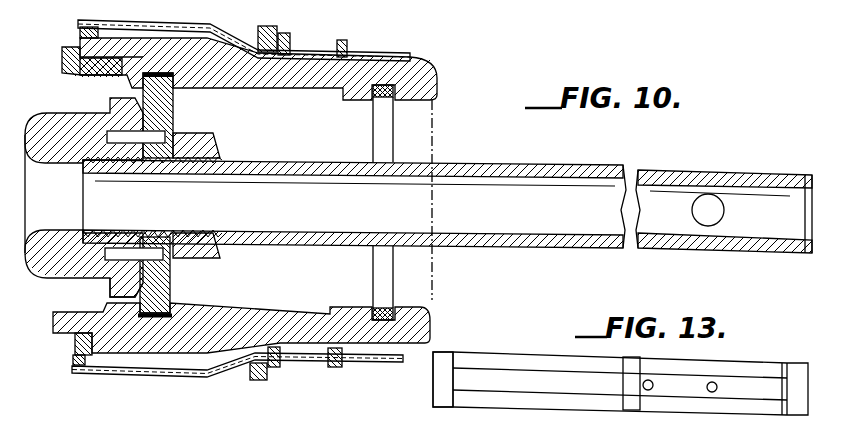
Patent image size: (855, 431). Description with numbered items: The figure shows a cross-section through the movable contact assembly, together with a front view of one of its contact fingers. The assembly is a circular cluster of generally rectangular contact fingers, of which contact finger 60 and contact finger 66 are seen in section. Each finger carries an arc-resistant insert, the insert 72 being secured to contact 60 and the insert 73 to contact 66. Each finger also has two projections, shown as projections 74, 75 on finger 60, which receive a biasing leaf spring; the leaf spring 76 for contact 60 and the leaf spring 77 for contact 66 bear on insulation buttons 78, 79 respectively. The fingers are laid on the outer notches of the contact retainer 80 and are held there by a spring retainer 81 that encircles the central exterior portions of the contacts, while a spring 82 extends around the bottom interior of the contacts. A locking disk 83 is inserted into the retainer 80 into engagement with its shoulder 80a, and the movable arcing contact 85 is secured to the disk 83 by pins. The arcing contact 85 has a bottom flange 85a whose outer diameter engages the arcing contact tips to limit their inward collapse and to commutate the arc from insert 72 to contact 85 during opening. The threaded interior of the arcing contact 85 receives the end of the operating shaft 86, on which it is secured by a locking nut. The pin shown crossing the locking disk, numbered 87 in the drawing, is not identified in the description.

In FIG. 10, the contact finger 60 is at (290, 86).
In FIG. 13, the contact finger 60 is at (490, 352).
In FIG. 10, the contact finger 66 is at (305, 312).
In FIG. 10, the arc-resistant insert 72 is at (62, 60).
In FIG. 13, the arc-resistant insert 72 is at (433, 390).
In FIG. 10, the arc-resistant insert 73 is at (53, 324).
In FIG. 10, the projection 74 is at (290, 38).
In FIG. 13, the projection 74 is at (650, 390).
In FIG. 10, the projection 75 is at (346, 42).
In FIG. 13, the projection 75 is at (714, 392).
In FIG. 10, the leaf spring 76 is at (192, 18).
In FIG. 13, the leaf spring 76 is at (533, 368).
In FIG. 10, the leaf spring 77 is at (125, 376).
In FIG. 10, the insulation button 78 is at (80, 33).
In FIG. 10, the insulation button 79 is at (73, 362).
In FIG. 13, the contact retainer 80 is at (628, 410).
In FIG. 10, the shoulder 80a is at (178, 262).
In FIG. 10, the spring retainer 81 is at (270, 27).
In FIG. 10, the spring 82 is at (373, 300).
In FIG. 10, the locking disk 83 is at (177, 120).
In FIG. 10, the movable arcing contact 85 is at (62, 112).
In FIG. 10, the bottom flange 85a is at (123, 287).
In FIG. 10, the operating shaft 86 is at (545, 150).
In FIG. 10, the cross pin 87 is at (168, 138).